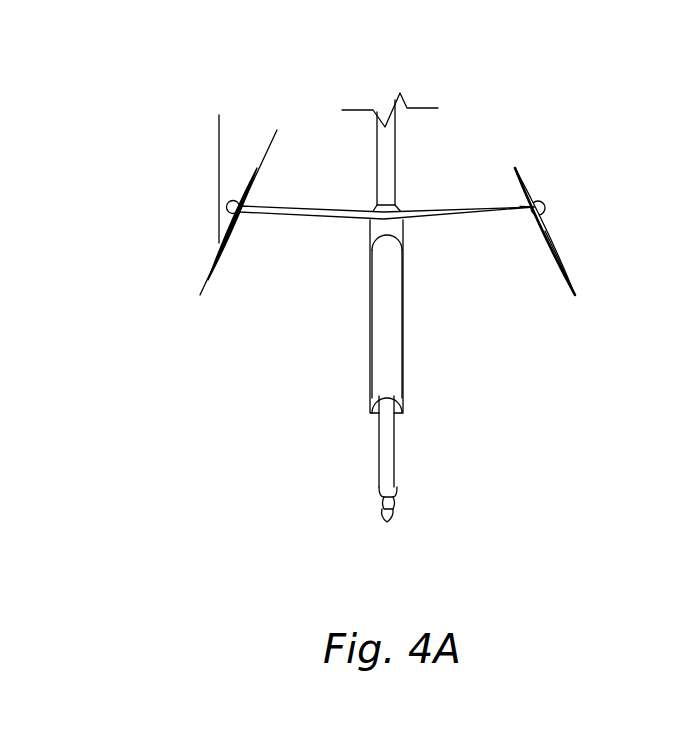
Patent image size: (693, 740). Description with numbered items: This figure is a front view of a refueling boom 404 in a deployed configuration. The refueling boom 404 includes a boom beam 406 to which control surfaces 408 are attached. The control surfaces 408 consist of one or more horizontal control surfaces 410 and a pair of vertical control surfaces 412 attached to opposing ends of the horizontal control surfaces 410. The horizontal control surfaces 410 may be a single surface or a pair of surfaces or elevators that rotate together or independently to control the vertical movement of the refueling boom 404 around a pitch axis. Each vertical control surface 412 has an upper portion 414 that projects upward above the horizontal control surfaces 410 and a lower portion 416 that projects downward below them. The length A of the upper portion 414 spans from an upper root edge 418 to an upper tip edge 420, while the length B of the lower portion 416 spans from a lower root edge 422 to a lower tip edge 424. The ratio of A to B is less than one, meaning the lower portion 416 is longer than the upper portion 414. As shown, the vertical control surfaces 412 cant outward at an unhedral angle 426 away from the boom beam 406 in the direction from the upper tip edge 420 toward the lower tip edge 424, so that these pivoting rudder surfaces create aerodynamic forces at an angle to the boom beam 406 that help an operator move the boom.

The refueling boom 404 is at (205, 64).
The boom beam 406 is at (383, 367).
The control surfaces 408 is at (283, 362).
The horizontal control surfaces 410 is at (303, 214).
The vertical control surfaces 412 is at (210, 283).
The upper portion 414 is at (538, 172).
The lower portion 416 is at (567, 253).
The upper root edge 418 is at (528, 202).
The upper tip edge 420 is at (517, 168).
The lower root edge 422 is at (533, 212).
The lower tip edge 424 is at (575, 295).
The unhedral angle 426 is at (270, 138).